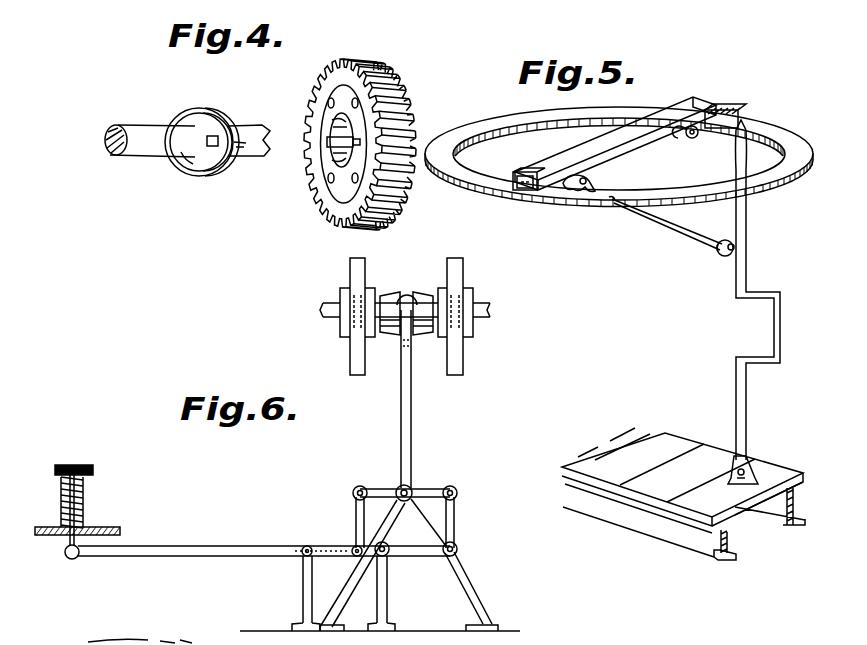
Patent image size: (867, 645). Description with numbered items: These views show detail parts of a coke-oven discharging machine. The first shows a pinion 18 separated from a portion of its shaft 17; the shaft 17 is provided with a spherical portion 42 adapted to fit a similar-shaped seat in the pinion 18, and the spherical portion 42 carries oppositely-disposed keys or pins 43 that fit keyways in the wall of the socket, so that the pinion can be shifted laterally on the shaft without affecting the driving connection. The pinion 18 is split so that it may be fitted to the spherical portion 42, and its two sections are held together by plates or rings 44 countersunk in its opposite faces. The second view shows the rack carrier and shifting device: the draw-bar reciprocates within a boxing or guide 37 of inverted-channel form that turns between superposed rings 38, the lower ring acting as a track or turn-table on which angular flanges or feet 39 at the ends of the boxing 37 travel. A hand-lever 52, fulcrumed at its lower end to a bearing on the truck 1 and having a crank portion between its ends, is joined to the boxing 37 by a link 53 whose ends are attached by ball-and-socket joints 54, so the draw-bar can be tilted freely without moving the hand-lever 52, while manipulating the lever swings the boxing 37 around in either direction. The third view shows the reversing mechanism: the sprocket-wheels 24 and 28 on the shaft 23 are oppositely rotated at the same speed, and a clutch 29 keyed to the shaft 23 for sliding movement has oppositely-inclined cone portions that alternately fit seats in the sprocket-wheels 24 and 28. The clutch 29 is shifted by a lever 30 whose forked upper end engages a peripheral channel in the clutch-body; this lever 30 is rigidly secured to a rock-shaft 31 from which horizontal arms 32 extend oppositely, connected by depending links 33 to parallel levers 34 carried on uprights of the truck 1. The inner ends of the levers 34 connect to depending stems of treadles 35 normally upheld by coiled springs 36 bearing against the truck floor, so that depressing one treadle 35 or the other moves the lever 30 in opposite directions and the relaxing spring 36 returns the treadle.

In FIG. 4, the shaft 17 is at (156, 152).
In FIG. 4, the spherical portion 42 is at (194, 108).
In FIG. 4, the keys or pins 43 is at (219, 136).
In FIG. 4, the pinion 18 is at (328, 202).
In FIG. 4, the plates or rings 44 is at (334, 123).
In FIG. 5, the boxing or guide 37 is at (559, 160).
In FIG. 5, the superposed rings 38 is at (665, 186).
In FIG. 5, the angular flanges or feet 39 is at (562, 188).
In FIG. 5, the hand-lever 52 is at (745, 316).
In FIG. 5, the link 53 is at (684, 224).
In FIG. 5, the ball-and-socket joints 54 is at (733, 245).
In FIG. 5, the truck 1 is at (795, 460).
In FIG. 6, the truck 1 is at (54, 527).
In FIG. 6, the shaft 23 is at (490, 309).
In FIG. 6, the terminal sprocket gear or wheel 24 is at (350, 271).
In FIG. 6, the terminal sprocket gear or wheel 28 is at (466, 270).
In FIG. 6, the clutch 29 is at (407, 293).
In FIG. 6, the lever 30 is at (412, 410).
In FIG. 6, the rock-shaft 31 is at (407, 486).
In FIG. 6, the horizontal arms 32 is at (378, 490).
In FIG. 6, the depending links 33 is at (357, 518).
In FIG. 6, the parallel levers 34 is at (200, 546).
In FIG. 6, the treadles 35 is at (93, 470).
In FIG. 6, the coiled springs 36 is at (83, 503).